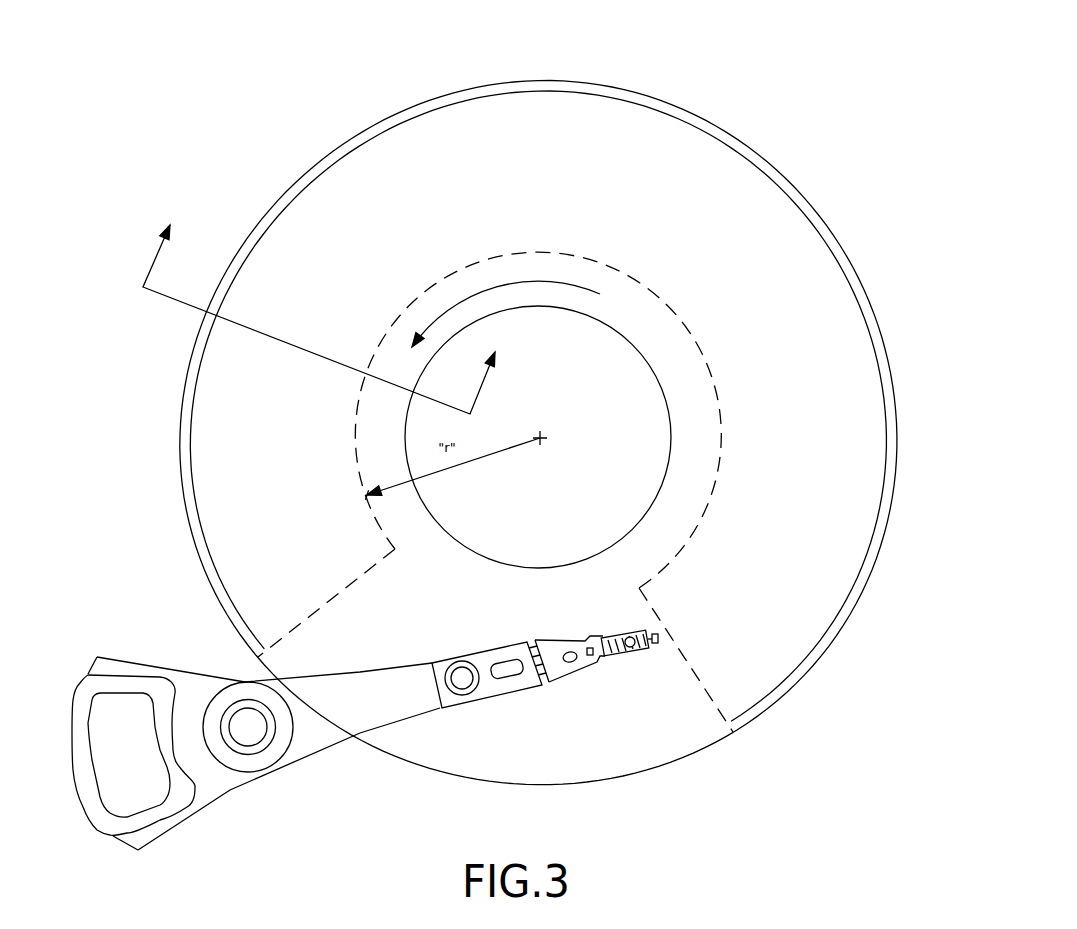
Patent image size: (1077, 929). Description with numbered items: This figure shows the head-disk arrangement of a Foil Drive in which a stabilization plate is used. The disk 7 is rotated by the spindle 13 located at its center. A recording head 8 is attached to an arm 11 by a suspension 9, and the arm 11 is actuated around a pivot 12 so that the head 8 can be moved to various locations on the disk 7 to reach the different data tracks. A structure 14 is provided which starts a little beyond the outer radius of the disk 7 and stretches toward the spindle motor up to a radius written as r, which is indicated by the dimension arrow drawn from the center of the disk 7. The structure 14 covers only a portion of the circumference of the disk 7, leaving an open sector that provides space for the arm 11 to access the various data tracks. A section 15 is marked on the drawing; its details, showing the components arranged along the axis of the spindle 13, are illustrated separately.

The disk 7 is at (667, 737).
The recording head 8 is at (637, 660).
The suspension 9 is at (552, 667).
The arm 11 is at (353, 715).
The pivot 12 is at (245, 740).
The spindle 13 is at (622, 375).
The structure 14 is at (862, 595).
The section 15 is at (167, 298).